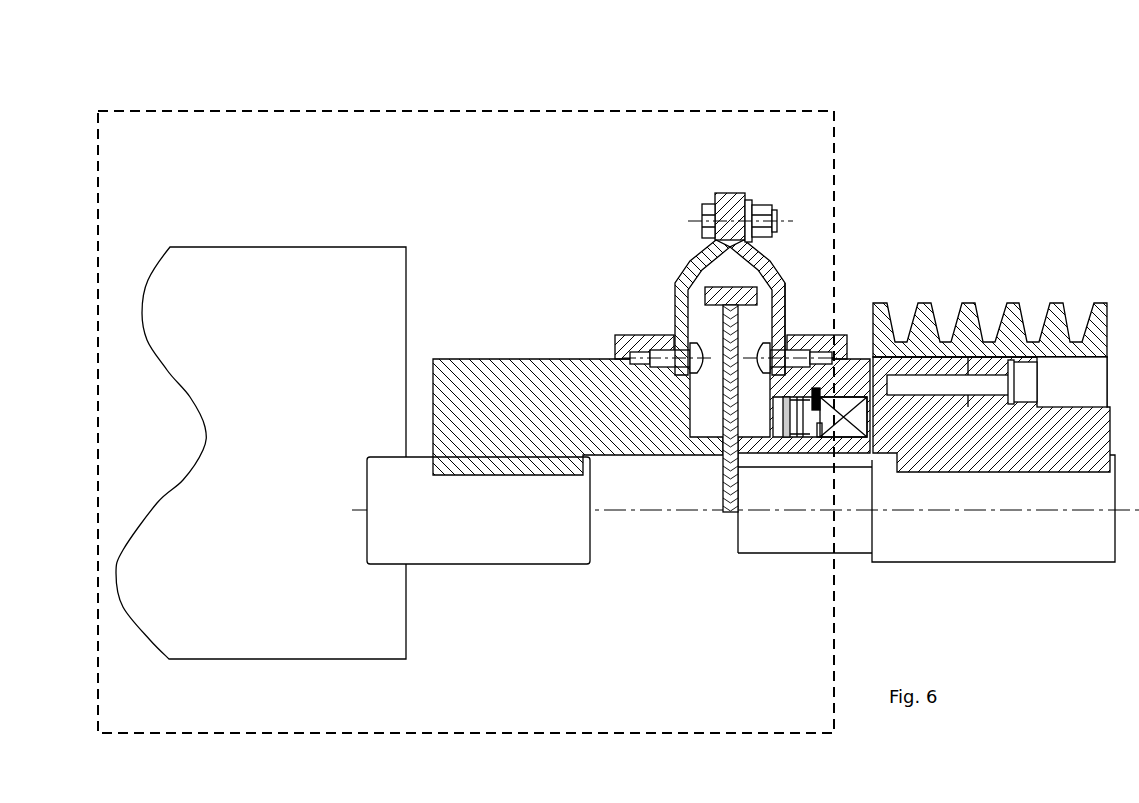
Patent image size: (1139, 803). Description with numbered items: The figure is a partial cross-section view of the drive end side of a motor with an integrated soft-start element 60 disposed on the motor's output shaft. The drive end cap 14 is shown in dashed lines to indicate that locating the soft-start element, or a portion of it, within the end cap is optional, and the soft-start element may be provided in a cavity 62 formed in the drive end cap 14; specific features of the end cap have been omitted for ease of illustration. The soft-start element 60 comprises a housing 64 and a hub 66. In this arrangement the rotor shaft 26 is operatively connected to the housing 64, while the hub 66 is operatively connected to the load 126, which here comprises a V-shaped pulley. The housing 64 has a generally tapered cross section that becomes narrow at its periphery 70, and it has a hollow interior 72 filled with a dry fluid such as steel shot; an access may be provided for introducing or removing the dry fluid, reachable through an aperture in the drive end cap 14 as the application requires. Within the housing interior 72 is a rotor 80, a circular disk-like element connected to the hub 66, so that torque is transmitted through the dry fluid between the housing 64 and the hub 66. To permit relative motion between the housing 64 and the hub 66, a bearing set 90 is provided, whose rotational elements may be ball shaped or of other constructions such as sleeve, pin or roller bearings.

The drive end cap 14 is at (272, 107).
The cavity 62 is at (318, 111).
The rotor shaft 26 is at (532, 532).
The soft-start element 60 is at (743, 192).
The housing 64 is at (775, 272).
The hub 66 is at (777, 450).
The periphery 70 is at (700, 258).
The hollow interior 72 is at (698, 285).
The rotor 80 is at (725, 478).
The bearing set 90 is at (855, 428).
The load 126 is at (997, 308).